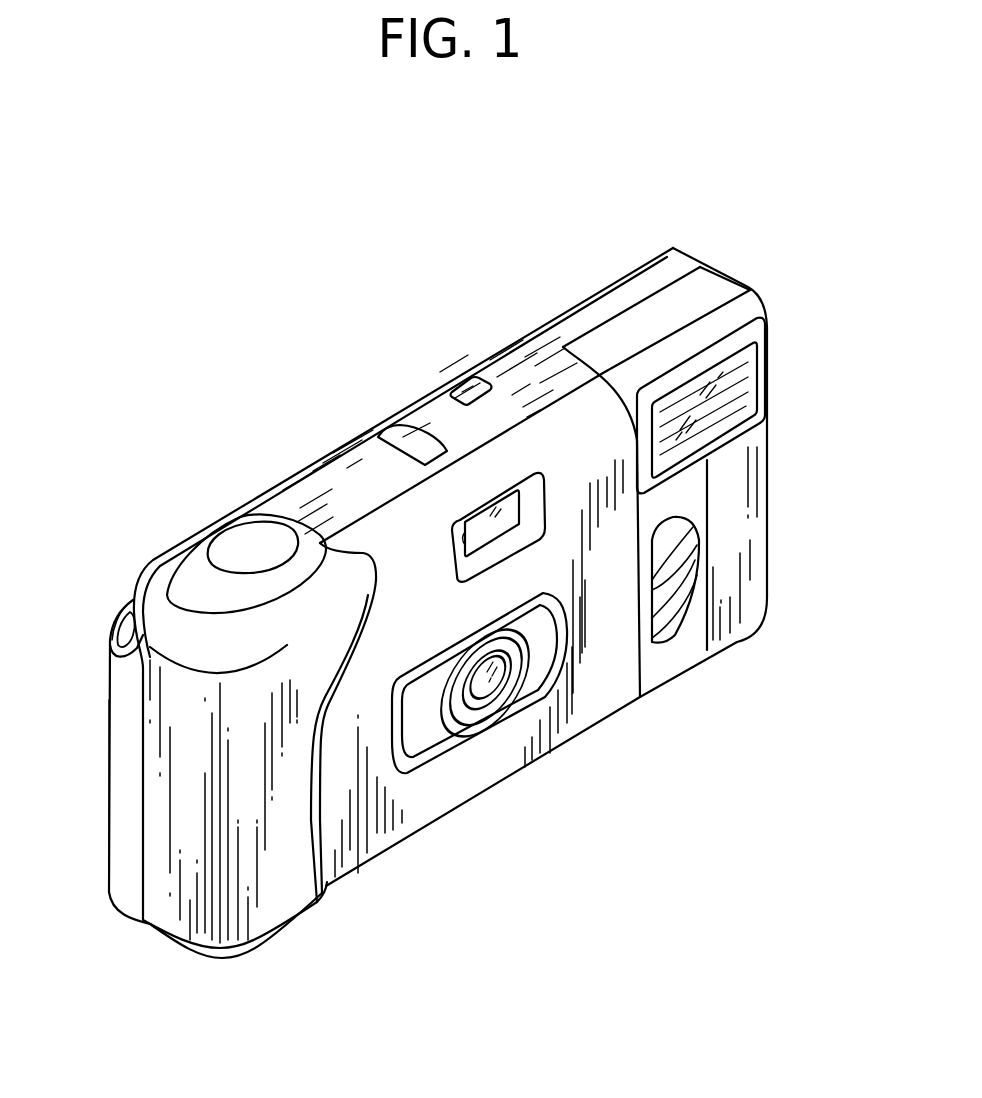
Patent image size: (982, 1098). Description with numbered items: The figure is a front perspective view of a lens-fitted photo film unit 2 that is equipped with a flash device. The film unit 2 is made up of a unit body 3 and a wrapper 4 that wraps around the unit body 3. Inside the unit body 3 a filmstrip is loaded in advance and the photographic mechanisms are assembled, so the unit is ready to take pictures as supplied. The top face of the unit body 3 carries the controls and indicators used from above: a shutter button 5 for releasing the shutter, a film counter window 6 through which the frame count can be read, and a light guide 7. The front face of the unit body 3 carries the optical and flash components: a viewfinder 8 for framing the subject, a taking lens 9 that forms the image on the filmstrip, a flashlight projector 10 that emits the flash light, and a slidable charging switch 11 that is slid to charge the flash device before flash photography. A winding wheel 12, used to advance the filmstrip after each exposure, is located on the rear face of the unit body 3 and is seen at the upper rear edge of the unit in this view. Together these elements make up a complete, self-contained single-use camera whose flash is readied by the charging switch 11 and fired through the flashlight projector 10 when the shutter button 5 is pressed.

The lens-fitted photo film unit 2 is at (605, 235).
The unit body 3 is at (128, 693).
The wrapper 4 is at (380, 822).
The shutter button 5 is at (245, 543).
The film counter window 6 is at (371, 430).
The light guide 7 is at (463, 387).
The viewfinder 8 is at (457, 553).
The taking lens 9 is at (483, 695).
The flashlight projector 10 is at (750, 383).
The slidable charging switch 11 is at (690, 550).
The winding wheel 12 is at (133, 597).